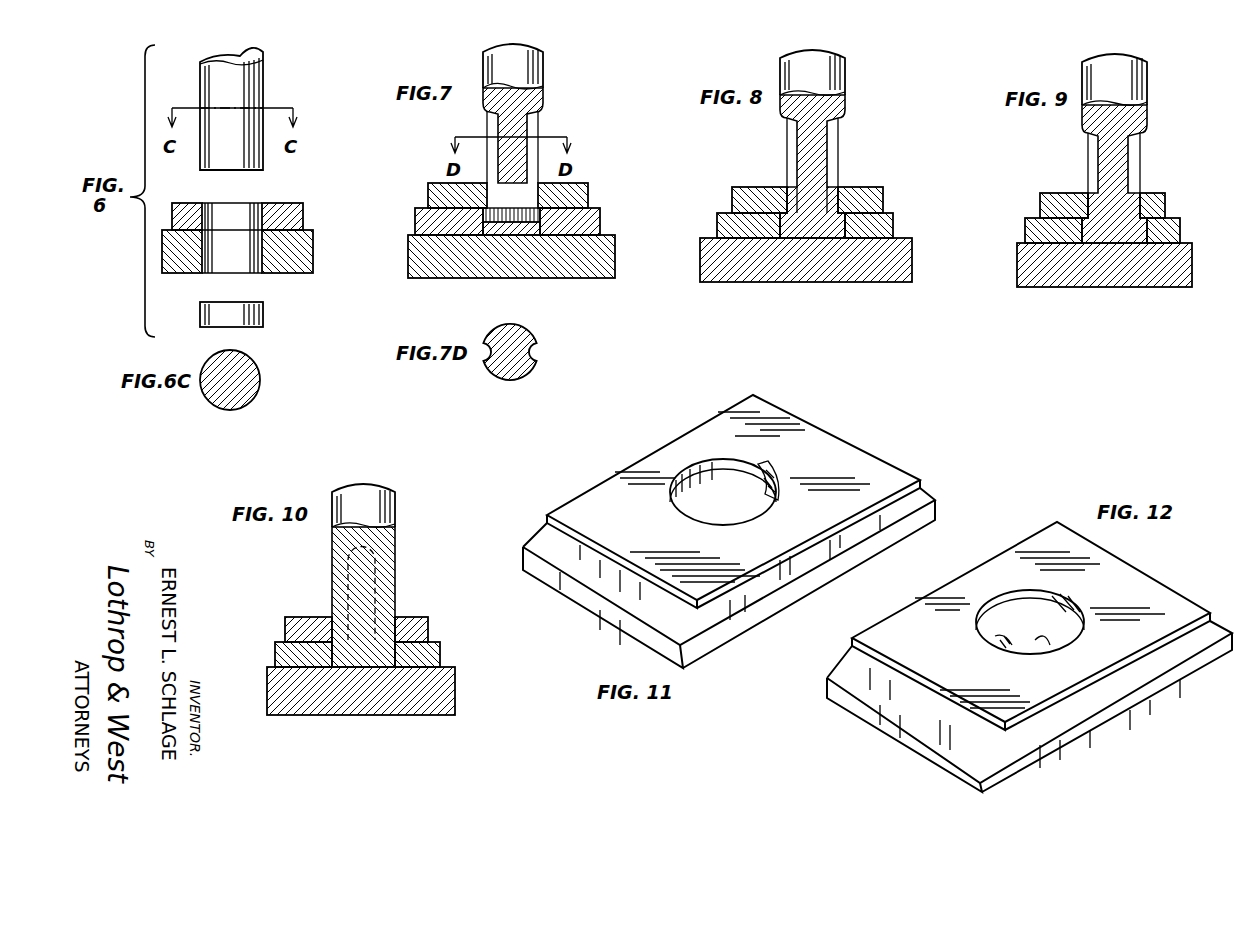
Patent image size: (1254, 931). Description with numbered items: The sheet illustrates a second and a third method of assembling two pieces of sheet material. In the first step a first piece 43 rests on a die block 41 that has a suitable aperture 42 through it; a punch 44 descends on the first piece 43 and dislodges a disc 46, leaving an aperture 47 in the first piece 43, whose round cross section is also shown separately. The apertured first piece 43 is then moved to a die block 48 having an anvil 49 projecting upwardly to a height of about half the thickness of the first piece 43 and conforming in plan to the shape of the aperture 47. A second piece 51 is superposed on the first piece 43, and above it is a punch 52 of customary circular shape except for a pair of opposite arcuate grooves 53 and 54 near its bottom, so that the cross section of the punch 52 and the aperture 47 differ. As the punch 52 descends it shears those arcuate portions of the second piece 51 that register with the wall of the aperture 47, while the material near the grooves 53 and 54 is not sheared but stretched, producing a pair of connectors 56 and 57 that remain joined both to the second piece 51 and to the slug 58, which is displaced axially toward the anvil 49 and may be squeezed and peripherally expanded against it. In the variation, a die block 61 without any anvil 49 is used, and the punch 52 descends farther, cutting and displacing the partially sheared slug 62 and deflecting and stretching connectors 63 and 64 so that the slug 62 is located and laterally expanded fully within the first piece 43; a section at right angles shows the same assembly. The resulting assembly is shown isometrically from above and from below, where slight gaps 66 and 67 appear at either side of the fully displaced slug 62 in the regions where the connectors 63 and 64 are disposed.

In FIG. 6, the die block 41 is at (313, 258).
In FIG. 6, the aperture 42 is at (245, 270).
In FIG. 6, the first piece 43 is at (303, 220).
In FIG. 7, the first piece 43 is at (600, 223).
In FIG. 9, the first piece 43 is at (1181, 227).
In FIG. 6, the punch 44 is at (240, 173).
In FIG. 6, the disc 46 is at (263, 322).
In FIG. 6, the aperture 47 is at (236, 212).
In FIG. 7, the die block 48 is at (612, 279).
In FIG. 7, the anvil 49 is at (505, 224).
In FIG. 8, the anvil 49 is at (800, 214).
In FIG. 7, the second piece 51 is at (590, 197).
In FIG. 8, the second piece 51 is at (884, 200).
In FIG. 7, the punch 52 is at (548, 72).
In FIG. 8, the punch 52 is at (847, 78).
In FIG. 9, the punch 52 is at (1148, 84).
In FIG. 7, the arcuate groove 53 is at (489, 126).
In FIG. 7, the arcuate groove 54 is at (537, 126).
In FIG. 8, the connector 56 is at (787, 212).
In FIG. 8, the connector 57 is at (857, 226).
In FIG. 8, the slug 58 is at (817, 228).
In FIG. 9, the die block 61 is at (1192, 286).
In FIG. 9, the slug 62 is at (1112, 230).
In FIG. 12, the slug 62 is at (1040, 642).
In FIG. 9, the connector 63 is at (1085, 224).
In FIG. 11, the connector 63 is at (690, 520).
In FIG. 9, the connector 64 is at (1138, 226).
In FIG. 11, the connector 64 is at (765, 475).
In FIG. 12, the gap 66 is at (1000, 645).
In FIG. 12, the gap 67 is at (1060, 597).